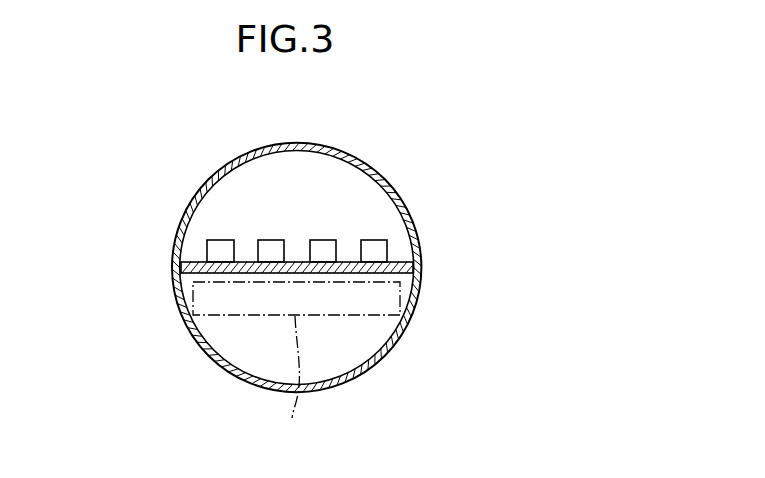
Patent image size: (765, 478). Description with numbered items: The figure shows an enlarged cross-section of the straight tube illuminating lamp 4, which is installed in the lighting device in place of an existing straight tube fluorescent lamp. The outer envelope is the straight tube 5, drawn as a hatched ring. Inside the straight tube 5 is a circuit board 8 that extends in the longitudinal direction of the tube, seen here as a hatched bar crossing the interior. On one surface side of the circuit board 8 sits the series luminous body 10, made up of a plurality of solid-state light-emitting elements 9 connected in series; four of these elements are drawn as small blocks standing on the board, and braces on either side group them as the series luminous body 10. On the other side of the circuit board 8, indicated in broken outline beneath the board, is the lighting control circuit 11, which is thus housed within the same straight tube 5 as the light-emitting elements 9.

The straight tube illuminating lamp 4 is at (296, 225).
The straight tube 5 is at (217, 168).
The circuit board 8 is at (379, 273).
The solid-state light-emitting element 9 is at (268, 240).
The series luminous body 10 is at (305, 210).
The lighting control circuit 11 is at (294, 384).